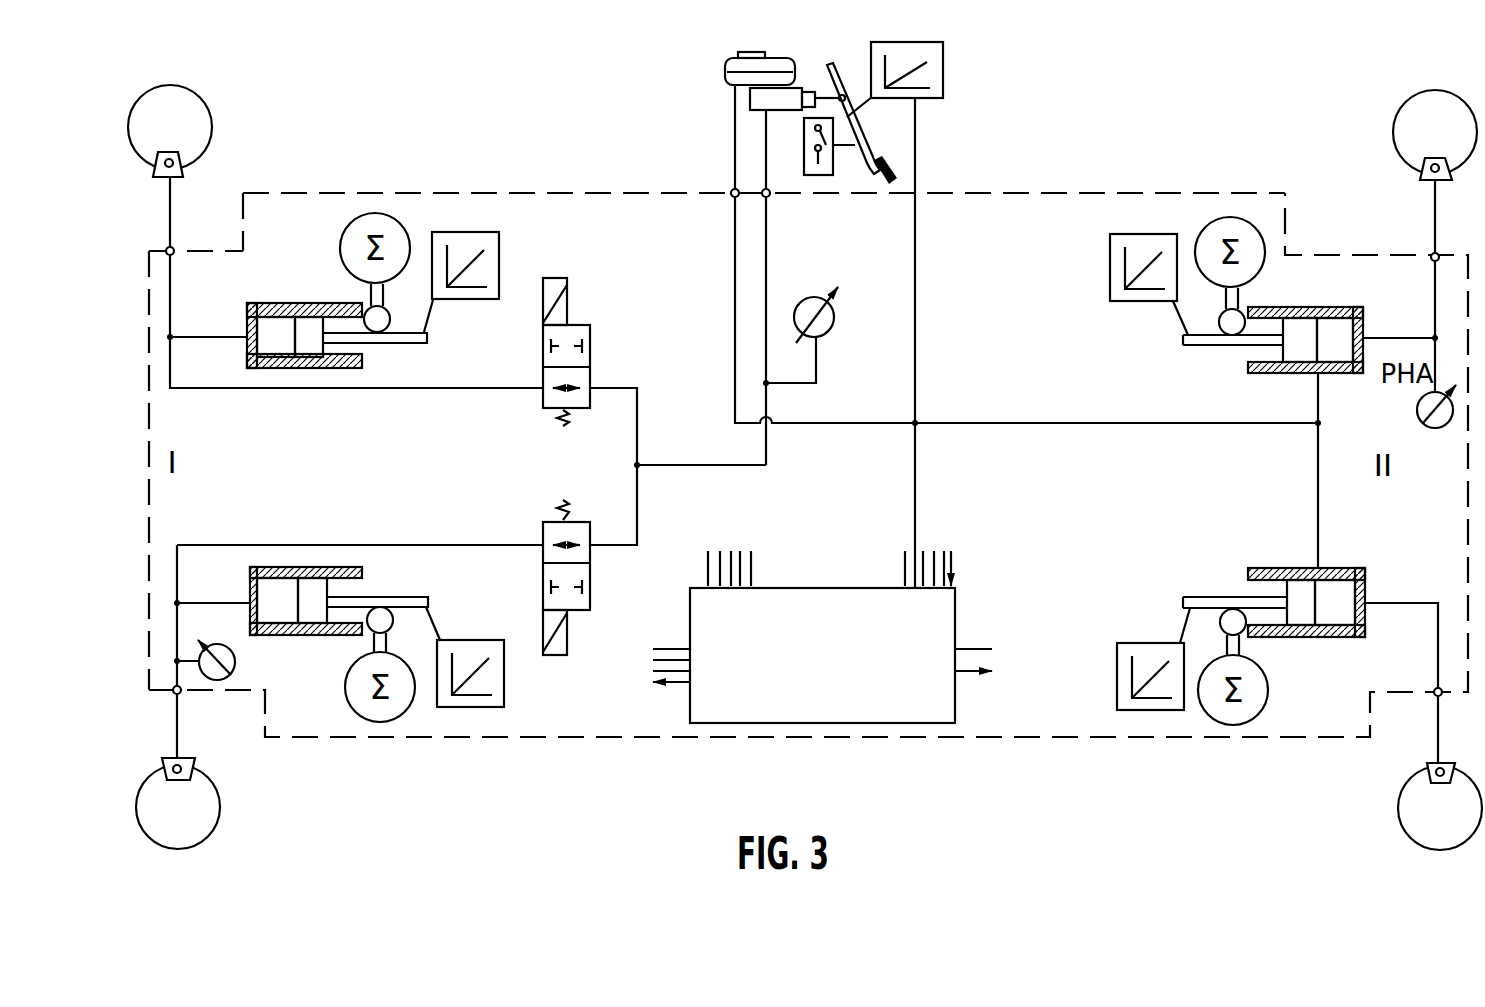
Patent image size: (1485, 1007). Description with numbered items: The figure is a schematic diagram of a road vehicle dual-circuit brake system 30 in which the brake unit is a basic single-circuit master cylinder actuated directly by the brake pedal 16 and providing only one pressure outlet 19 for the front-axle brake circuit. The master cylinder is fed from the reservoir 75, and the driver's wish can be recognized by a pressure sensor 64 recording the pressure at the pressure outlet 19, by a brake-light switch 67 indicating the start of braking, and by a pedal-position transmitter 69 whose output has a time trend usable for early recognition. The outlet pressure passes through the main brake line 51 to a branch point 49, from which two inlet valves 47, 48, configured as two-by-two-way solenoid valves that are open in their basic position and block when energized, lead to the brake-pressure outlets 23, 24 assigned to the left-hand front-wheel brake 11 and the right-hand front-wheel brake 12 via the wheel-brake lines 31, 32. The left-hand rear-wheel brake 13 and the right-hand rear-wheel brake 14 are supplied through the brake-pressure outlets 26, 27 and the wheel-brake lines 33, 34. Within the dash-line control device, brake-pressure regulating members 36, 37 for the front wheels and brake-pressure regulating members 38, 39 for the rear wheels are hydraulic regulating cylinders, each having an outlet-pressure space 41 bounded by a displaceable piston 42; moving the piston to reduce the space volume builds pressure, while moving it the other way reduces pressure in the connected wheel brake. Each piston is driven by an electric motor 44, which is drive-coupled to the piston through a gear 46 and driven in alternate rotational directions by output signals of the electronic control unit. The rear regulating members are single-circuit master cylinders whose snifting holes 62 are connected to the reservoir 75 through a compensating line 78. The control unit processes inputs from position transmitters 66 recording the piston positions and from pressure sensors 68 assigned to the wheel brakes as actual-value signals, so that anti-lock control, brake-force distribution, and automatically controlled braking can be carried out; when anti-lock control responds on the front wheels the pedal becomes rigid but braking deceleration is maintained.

The left-hand front-wheel brake 11 is at (216, 800).
The right-hand front-wheel brake 12 is at (208, 142).
The left-hand rear-wheel brake 13 is at (1400, 805).
The right-hand rear-wheel brake 14 is at (1394, 132).
The brake pedal 16 is at (868, 158).
The pressure outlet 19 is at (763, 112).
The brake-pressure outlet 23 is at (181, 694).
The brake-pressure outlet 24 is at (174, 256).
The brake-pressure outlet 26 is at (1435, 688).
The brake-pressure outlet 27 is at (1432, 262).
The brake system 30 is at (603, 155).
The wheel-brake line 31 is at (179, 745).
The wheel-brake line 32 is at (173, 213).
The wheel-brake line 33 is at (1437, 723).
The wheel-brake line 34 is at (1433, 221).
The brake-pressure regulating member 36 is at (250, 590).
The brake-pressure regulating member 37 is at (243, 350).
The brake-pressure regulating member 38 is at (1293, 567).
The brake-pressure regulating member 39 is at (1291, 374).
The outlet-pressure space 41 is at (276, 316).
The piston 42 is at (312, 316).
The electric motor 44 is at (342, 236).
The gear 46 is at (393, 315).
The inlet valve 47 is at (551, 522).
The inlet valve 48 is at (551, 410).
The branch point 49 is at (634, 465).
The main brake line 51 is at (683, 465).
The snifting hole 62 is at (1320, 373).
The pressure sensor 64 is at (835, 318).
The position transmitter 66 is at (500, 246).
The brake-light switch 67 is at (804, 140).
The pressure sensor 68 is at (224, 645).
The pedal-position transmitter 69 is at (944, 76).
The reservoir 75 is at (725, 72).
The compensating line 78 is at (978, 423).